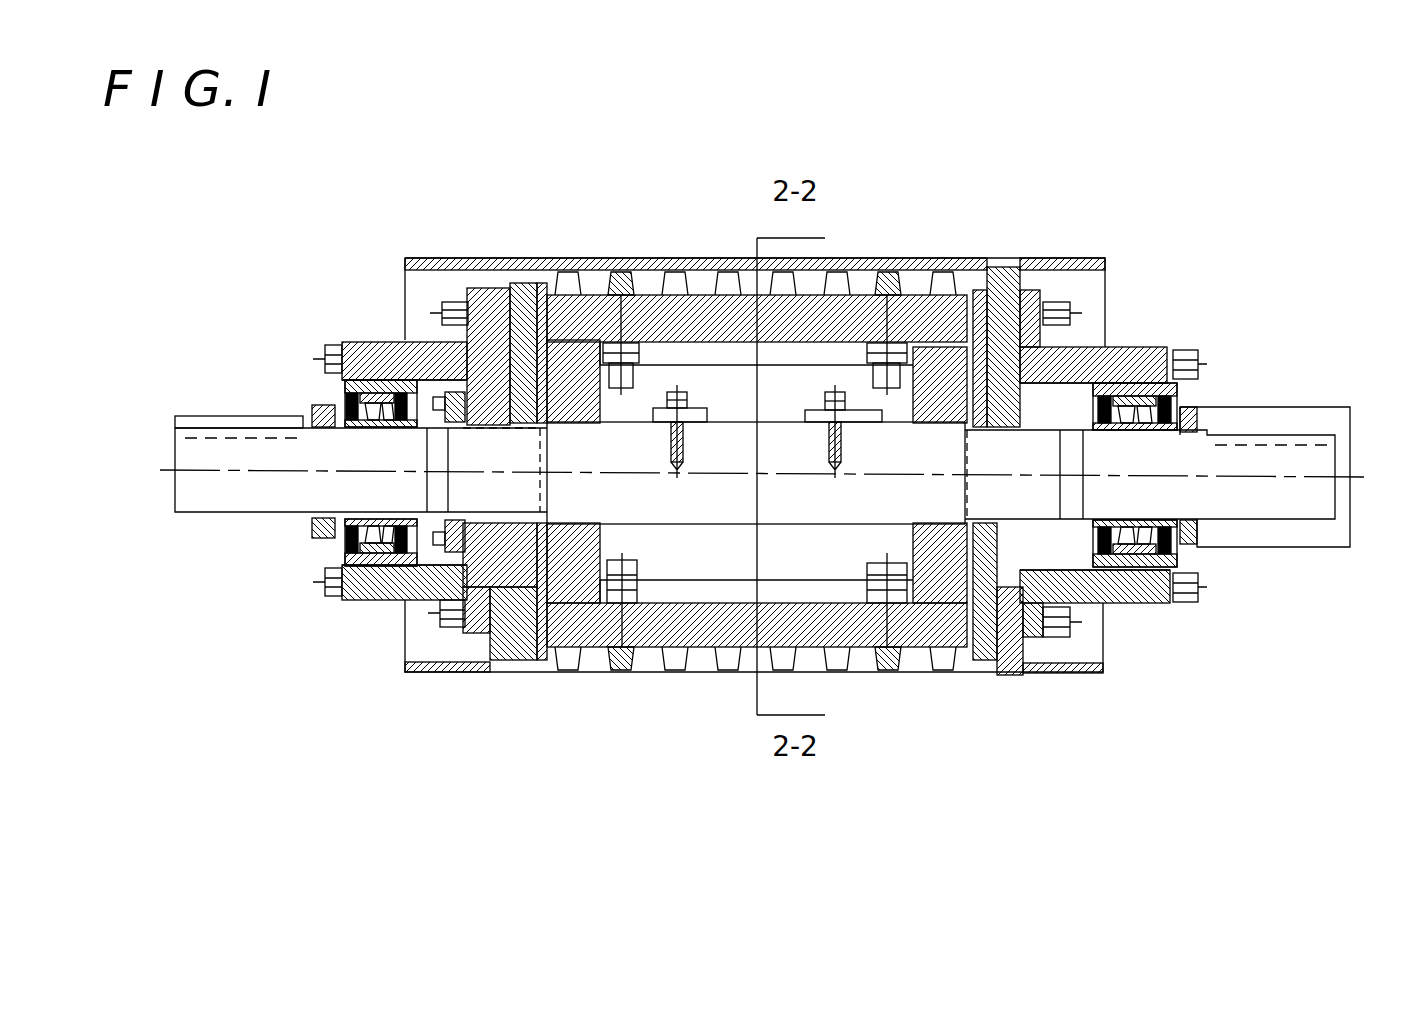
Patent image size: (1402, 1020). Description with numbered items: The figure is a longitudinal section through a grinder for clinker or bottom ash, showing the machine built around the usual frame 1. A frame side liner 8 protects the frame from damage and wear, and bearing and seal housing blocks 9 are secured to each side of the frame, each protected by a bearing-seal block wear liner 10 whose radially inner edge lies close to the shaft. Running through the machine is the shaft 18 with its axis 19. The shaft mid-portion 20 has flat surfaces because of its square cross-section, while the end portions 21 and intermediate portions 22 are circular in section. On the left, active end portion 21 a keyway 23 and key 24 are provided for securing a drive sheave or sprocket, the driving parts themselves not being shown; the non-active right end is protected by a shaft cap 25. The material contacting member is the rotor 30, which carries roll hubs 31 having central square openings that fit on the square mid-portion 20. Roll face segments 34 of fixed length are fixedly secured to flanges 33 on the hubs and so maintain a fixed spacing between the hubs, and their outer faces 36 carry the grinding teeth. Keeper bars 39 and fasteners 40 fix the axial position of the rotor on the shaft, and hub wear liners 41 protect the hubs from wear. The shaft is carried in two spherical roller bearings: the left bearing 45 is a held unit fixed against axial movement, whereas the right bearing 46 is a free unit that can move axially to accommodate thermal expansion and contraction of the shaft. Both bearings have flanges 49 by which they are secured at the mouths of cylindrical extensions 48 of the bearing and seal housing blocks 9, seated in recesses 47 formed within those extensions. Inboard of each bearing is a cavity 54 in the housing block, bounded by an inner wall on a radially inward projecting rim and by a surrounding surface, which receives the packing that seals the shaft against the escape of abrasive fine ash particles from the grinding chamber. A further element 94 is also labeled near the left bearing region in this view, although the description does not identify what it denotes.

The frame 1 is at (525, 258).
The frame side liner 8 is at (537, 283).
The bearing and seal housing block 9 is at (500, 605).
The bearing-seal block wear liner 10 is at (450, 340).
The shaft 18 is at (740, 452).
The axis 19 is at (716, 467).
The shaft mid-portion 20 is at (738, 500).
The end portion 21 is at (190, 502).
The intermediate portion 22 is at (398, 602).
The keyway 23 is at (176, 428).
The key 24 is at (190, 418).
The shaft cap 25 is at (1267, 405).
The rotor 30 is at (650, 282).
The roll hub 31 is at (587, 640).
The flange 33 is at (857, 295).
The roll face segment 34 is at (914, 270).
The outer face 36 is at (862, 645).
The keeper bar 39 is at (702, 505).
The fastener 40 is at (678, 493).
The hub wear liner 41 is at (497, 280).
The spherical roller bearing 45 is at (325, 395).
The spherical roller bearing 46 is at (1190, 390).
The recess 47 is at (1087, 343).
The cylindrical extension 48 is at (367, 343).
The flange 49 is at (1153, 350).
The cavity 54 is at (433, 553).
The spacer 94 is at (487, 400).